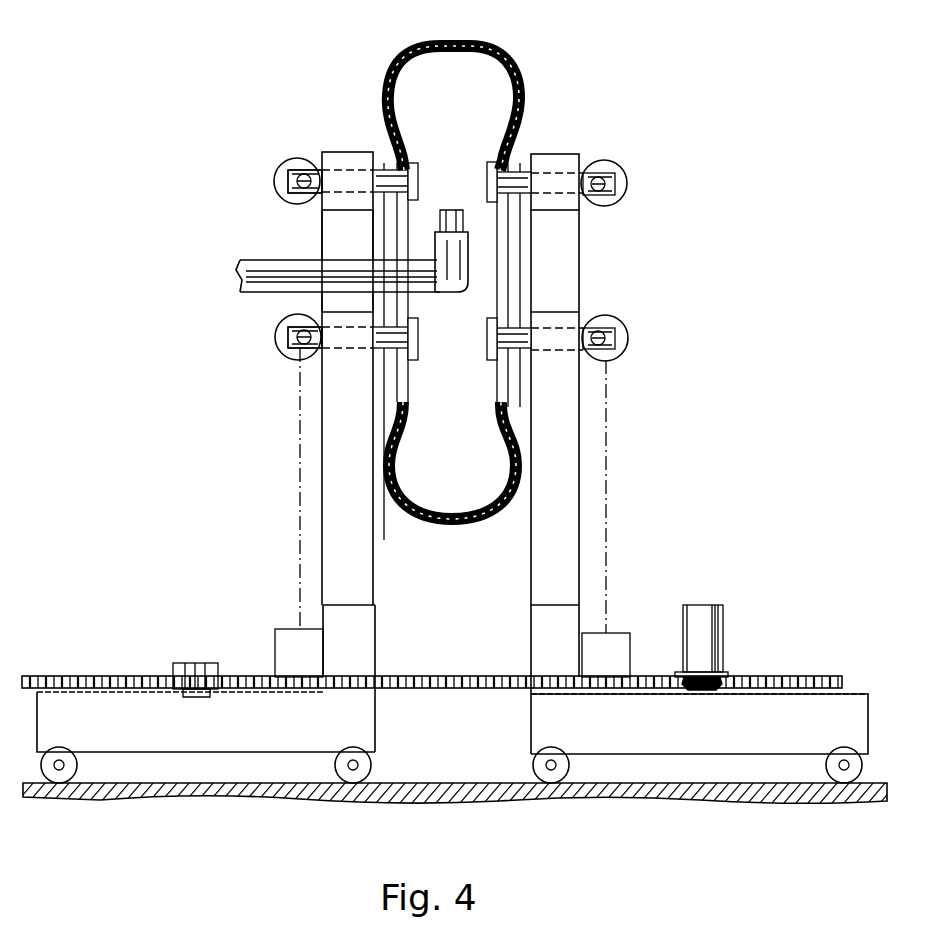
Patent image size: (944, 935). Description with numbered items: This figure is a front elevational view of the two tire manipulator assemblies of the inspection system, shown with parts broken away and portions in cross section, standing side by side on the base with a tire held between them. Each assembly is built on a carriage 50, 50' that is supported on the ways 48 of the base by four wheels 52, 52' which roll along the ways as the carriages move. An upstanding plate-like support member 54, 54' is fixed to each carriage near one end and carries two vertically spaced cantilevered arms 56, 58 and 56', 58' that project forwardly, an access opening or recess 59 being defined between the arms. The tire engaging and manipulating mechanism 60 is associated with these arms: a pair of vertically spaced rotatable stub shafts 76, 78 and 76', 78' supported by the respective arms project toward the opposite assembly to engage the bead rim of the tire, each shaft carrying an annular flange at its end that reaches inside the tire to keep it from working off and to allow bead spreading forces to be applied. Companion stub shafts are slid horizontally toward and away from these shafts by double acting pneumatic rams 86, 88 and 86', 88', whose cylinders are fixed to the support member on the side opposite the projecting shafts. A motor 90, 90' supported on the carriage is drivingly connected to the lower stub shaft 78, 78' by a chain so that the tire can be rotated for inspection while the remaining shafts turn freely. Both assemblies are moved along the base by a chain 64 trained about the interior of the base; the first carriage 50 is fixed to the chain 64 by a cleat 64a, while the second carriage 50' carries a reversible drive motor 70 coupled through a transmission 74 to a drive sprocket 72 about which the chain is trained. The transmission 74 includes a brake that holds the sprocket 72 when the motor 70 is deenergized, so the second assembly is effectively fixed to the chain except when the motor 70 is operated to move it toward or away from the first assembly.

The way 48 is at (608, 800).
The carriage 50 is at (206, 722).
The carriage 50' is at (699, 724).
The wheels 52 is at (206, 791).
The wheels 52' is at (697, 793).
The support member 54 is at (305, 659).
The support member 54' is at (602, 630).
The cantilevered arm 56 is at (330, 149).
The cantilevered arm 56' is at (585, 216).
The cantilevered arm 58 is at (307, 419).
The cantilevered arm 58' is at (597, 421).
The access opening 59 is at (330, 237).
The tire engaging and manipulating mechanism 60 is at (270, 356).
The chain 64 is at (105, 676).
The cleat 64a is at (181, 663).
The reversible drive motor 70 is at (714, 634).
The drive sprocket 72 is at (740, 668).
The transmission 74 is at (672, 672).
The stub shaft 76 is at (410, 332).
The stub shaft 76' is at (528, 257).
The stub shaft 78 is at (417, 339).
The stub shaft 78' is at (531, 354).
The ram 86 is at (268, 163).
The ram 86' is at (638, 183).
The ram 88 is at (287, 335).
The ram 88' is at (624, 336).
The motor 90 is at (299, 653).
The motor 90' is at (606, 655).